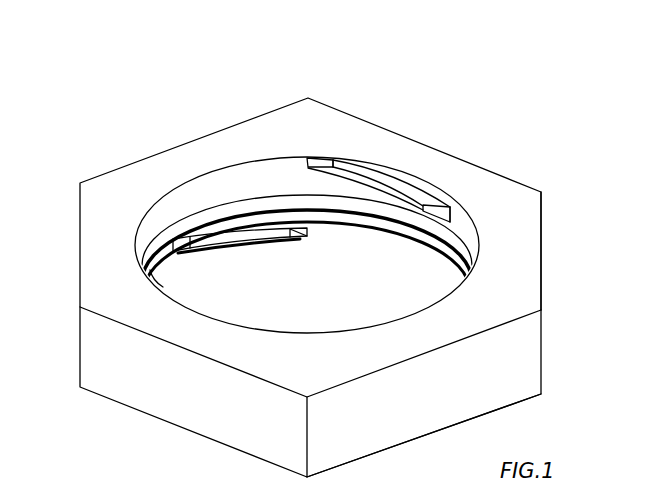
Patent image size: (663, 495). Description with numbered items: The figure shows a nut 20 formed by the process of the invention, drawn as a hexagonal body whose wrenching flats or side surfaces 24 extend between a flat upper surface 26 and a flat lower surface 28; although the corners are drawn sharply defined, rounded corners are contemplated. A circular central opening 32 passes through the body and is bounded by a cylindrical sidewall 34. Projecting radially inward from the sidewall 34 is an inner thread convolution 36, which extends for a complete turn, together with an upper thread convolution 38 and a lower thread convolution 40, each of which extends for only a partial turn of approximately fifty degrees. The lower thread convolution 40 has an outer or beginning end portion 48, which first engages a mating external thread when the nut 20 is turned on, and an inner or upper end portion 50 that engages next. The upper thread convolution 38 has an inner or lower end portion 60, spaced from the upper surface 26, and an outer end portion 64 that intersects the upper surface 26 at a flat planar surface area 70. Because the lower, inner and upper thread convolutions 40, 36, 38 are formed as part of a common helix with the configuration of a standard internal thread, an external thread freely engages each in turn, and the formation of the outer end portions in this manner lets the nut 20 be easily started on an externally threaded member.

The nut 20 is at (494, 45).
The wrenching flats or side surfaces 24 is at (197, 140).
The upper surface 26 is at (527, 302).
The lower surface 28 is at (507, 376).
The circular central opening 32 is at (207, 293).
The cylindrical sidewall 34 is at (163, 207).
The inner thread convolution 36 is at (394, 250).
The upper thread convolution 38 is at (418, 174).
The lower thread convolution 40 is at (268, 248).
The outer or beginning end portion of the lower thread convolution 48 is at (303, 234).
The inner or upper end portion of the lower thread convolution 50 is at (157, 279).
The inner or lower end portion of the upper thread convolution 60 is at (444, 220).
The outer end portion of the upper thread convolution 64 is at (324, 157).
The flat planar surface area 70 is at (334, 158).